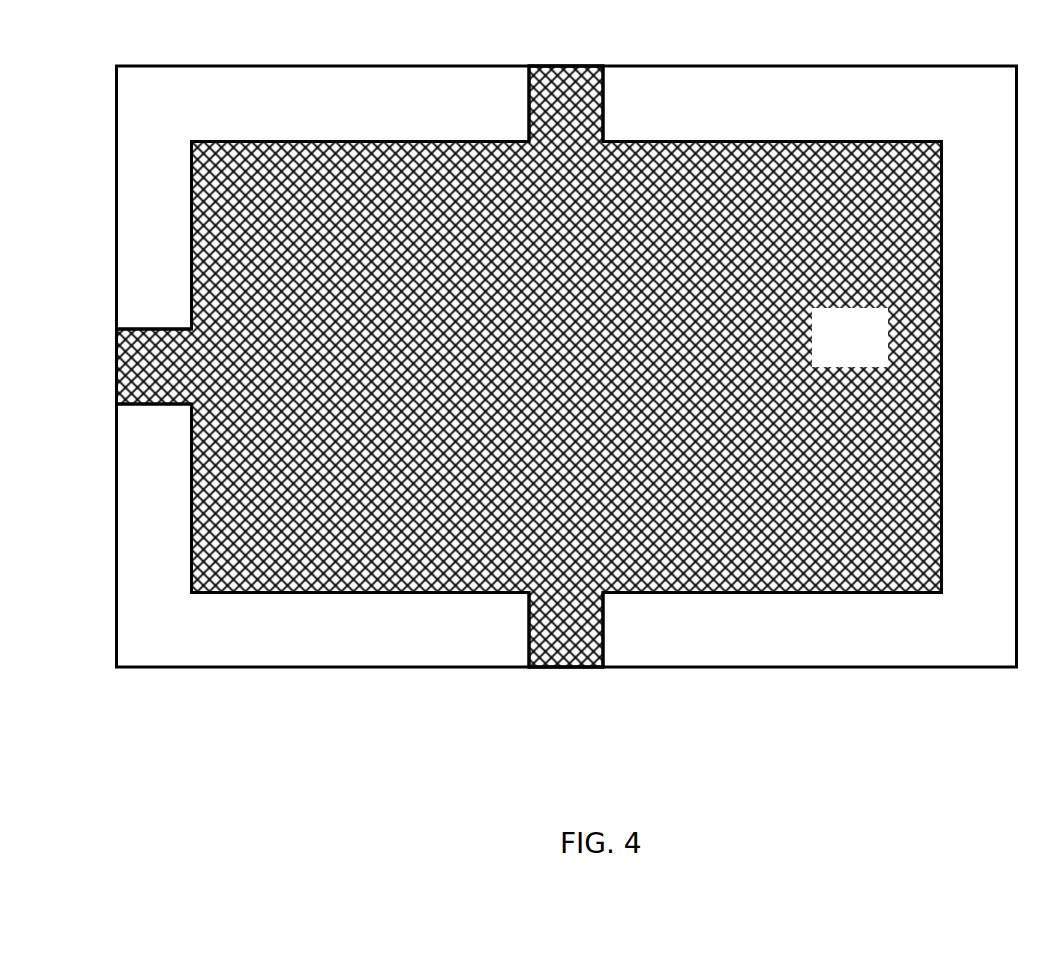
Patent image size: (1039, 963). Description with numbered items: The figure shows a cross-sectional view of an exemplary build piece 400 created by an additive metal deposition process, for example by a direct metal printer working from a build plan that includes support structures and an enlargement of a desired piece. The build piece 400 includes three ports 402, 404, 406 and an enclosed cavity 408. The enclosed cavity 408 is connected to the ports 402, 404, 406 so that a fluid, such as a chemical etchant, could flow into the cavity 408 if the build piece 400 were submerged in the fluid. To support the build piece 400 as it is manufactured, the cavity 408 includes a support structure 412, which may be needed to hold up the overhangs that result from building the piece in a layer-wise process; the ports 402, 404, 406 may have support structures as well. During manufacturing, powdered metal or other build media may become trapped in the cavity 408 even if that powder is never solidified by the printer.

The build piece 400 is at (287, 66).
The port 402 is at (563, 66).
The port 404 is at (567, 667).
The port 406 is at (117, 364).
The enclosed cavity 408 is at (871, 346).
The support structure 412 is at (435, 593).